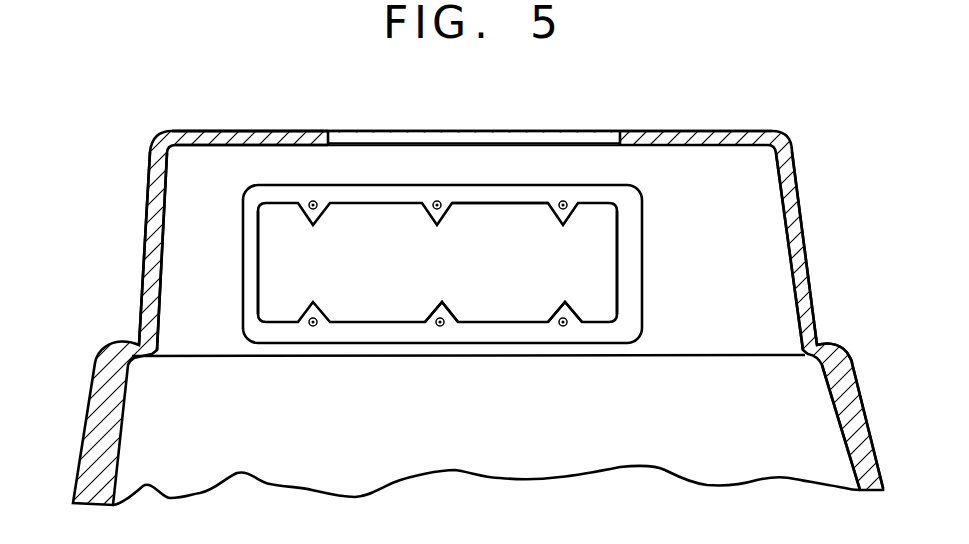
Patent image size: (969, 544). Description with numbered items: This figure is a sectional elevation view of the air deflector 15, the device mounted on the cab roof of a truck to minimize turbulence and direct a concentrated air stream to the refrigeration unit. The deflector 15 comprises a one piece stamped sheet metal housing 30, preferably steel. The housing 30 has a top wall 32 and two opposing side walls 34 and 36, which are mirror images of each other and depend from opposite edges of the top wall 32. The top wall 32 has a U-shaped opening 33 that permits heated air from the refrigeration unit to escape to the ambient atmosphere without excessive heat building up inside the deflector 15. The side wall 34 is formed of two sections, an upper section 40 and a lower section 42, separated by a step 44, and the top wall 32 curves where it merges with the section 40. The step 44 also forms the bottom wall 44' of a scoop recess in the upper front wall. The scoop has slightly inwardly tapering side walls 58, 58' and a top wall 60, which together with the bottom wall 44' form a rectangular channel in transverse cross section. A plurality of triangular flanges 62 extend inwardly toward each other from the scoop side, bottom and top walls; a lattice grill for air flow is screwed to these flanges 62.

The air deflector 15 is at (800, 118).
The housing 30 is at (613, 115).
The top wall 32 is at (448, 131).
The U-shaped opening 33 is at (258, 131).
The side wall 34 is at (822, 315).
The side wall 36 is at (120, 300).
The side wall section 40 is at (807, 253).
The side wall section 42 is at (867, 413).
The step 44 is at (855, 349).
The bottom wall 44' is at (442, 264).
The scoop side wall 58 is at (294, 262).
The scoop side wall 58' is at (585, 262).
The scoop top wall 60 is at (527, 202).
The triangular flanges 62 is at (554, 313).